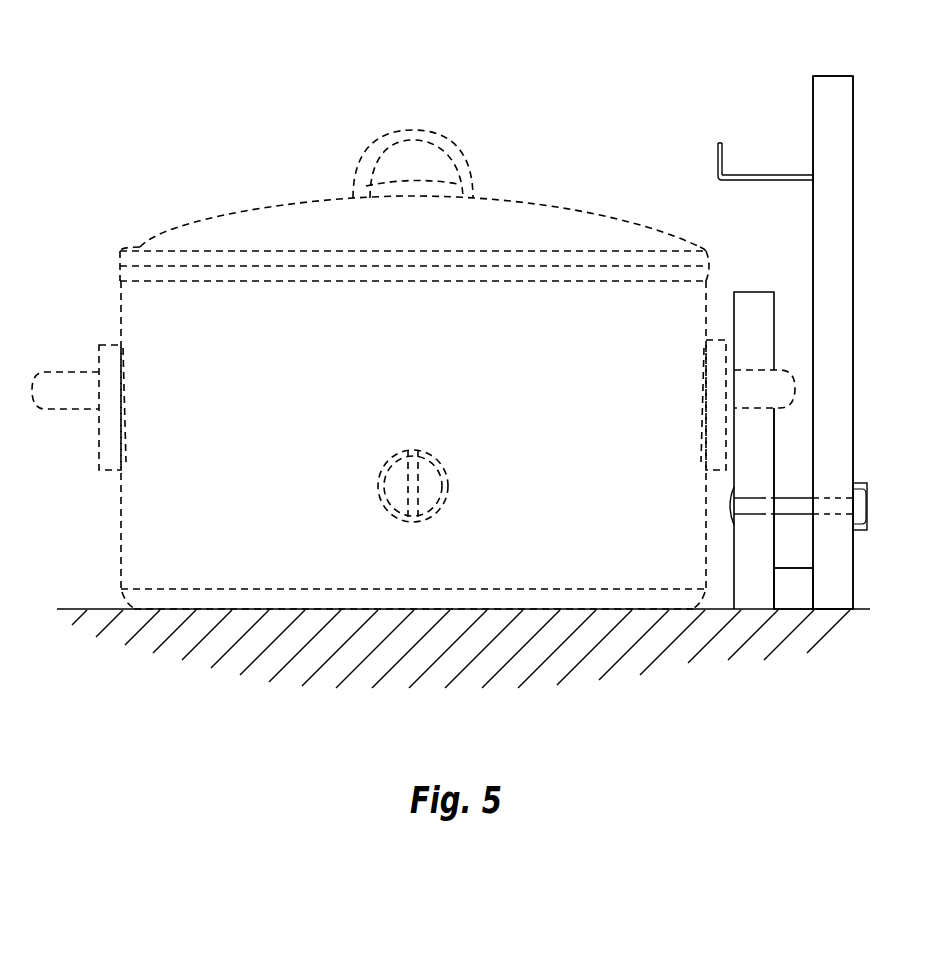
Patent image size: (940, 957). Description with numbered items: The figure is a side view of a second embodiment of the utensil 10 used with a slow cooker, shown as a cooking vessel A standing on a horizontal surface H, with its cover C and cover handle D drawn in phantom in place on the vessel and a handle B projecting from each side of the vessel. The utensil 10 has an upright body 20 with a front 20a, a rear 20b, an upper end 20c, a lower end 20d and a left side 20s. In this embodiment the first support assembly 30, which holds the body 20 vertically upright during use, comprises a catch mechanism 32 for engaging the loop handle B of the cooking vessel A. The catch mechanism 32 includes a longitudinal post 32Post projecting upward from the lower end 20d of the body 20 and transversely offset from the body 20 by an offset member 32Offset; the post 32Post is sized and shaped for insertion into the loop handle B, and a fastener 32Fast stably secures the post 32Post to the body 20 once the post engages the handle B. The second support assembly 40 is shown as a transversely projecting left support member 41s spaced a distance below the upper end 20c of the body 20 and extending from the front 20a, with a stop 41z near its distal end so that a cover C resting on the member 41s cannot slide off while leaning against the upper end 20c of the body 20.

The utensil 10 is at (722, 46).
The body 20 is at (823, 123).
The front surface of body 20a is at (813, 100).
The rear surface of body 20b is at (853, 192).
The upper end of body 20c is at (828, 76).
The lower end of body 20d is at (835, 612).
The left side edge of body 20s is at (843, 247).
The foundation support assembly 30 is at (783, 468).
The catch mechanism 32 is at (794, 538).
The longitudinal post 32Post is at (744, 322).
The fastener 32Fast is at (731, 516).
The offset member 32Offset is at (792, 592).
The cover support assembly 40 is at (712, 139).
The stop 41z is at (716, 161).
The left support member 41s is at (765, 183).
The cooking vessel A is at (413, 445).
The handle on cooking vessel B is at (58, 413).
The cover of cooking vessel C is at (414, 238).
The handle on cover D is at (441, 138).
The horizontal surface H is at (463, 648).